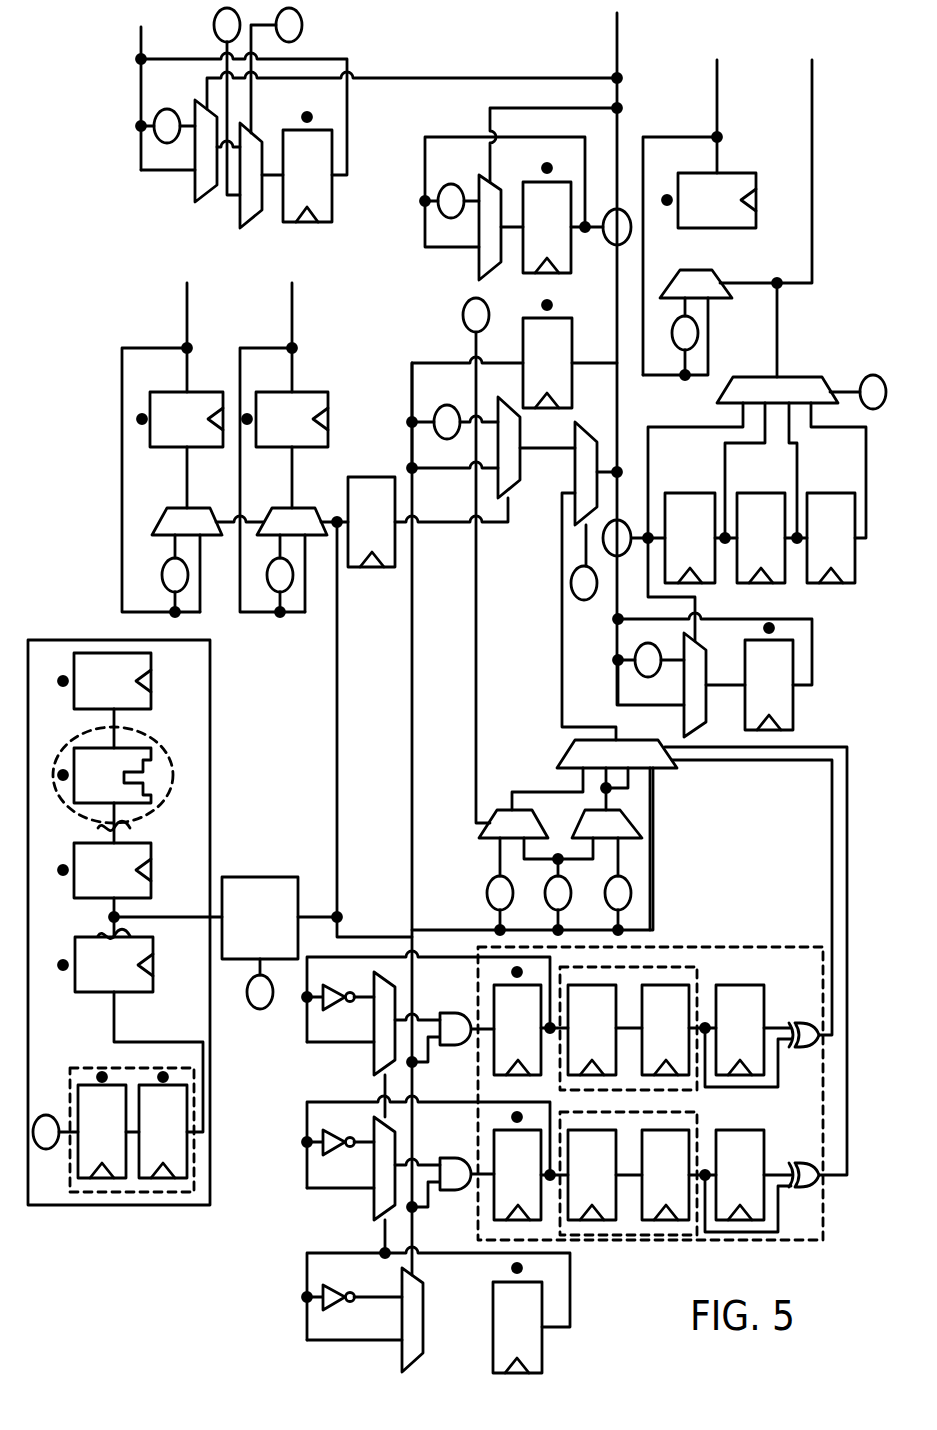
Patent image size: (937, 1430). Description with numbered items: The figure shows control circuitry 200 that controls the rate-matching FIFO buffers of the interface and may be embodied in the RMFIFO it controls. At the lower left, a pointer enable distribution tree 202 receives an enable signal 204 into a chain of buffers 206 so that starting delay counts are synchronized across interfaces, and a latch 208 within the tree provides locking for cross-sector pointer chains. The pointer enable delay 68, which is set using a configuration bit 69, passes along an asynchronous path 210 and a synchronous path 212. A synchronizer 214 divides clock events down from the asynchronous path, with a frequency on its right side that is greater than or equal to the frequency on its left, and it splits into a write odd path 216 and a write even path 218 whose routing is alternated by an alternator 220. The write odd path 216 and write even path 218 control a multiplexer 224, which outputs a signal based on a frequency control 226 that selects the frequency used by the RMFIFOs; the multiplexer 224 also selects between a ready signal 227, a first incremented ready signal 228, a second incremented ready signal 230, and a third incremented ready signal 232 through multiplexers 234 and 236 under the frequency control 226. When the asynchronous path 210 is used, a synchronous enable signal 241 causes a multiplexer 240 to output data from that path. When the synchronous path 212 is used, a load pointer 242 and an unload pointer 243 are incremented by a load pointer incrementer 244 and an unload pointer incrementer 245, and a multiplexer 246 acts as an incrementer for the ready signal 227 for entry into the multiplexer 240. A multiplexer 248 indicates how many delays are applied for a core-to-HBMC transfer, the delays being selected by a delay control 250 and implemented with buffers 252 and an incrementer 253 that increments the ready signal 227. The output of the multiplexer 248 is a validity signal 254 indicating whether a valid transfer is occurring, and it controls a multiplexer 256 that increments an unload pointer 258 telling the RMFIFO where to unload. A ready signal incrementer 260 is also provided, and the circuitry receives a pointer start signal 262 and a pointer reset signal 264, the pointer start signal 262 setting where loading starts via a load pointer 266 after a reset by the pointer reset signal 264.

The control circuitry 200 is at (236, 1334).
The pointer enable distribution tree 202 is at (119, 1206).
The enable signal 204 is at (158, 1042).
The buffers 206 is at (114, 652).
The latch 208 is at (130, 748).
The asynchronous path 210 is at (373, 935).
The synchronous path 212 is at (340, 730).
The synchronizer 214 is at (724, 1240).
The write odd path 216 is at (850, 875).
The write even path 218 is at (830, 905).
The alternator 220 is at (566, 1343).
The multiplexer 224 is at (563, 752).
The frequency control 226 is at (464, 303).
The ready signal 227 is at (620, 52).
The first incremented ready signal 228 is at (630, 882).
The second incremented ready signal 230 is at (547, 886).
The third incremented ready signal 232 is at (491, 904).
The multiplexer 234 is at (497, 812).
The multiplexer 236 is at (634, 827).
The multiplexer 240 is at (589, 426).
The synchronous enable signal 241 is at (594, 599).
The load pointer 242 is at (186, 319).
The unload pointer 243 is at (291, 319).
The load pointer incrementer 244 is at (201, 445).
The unload pointer incrementer 245 is at (362, 455).
The multiplexer 246 is at (521, 463).
The multiplexer 248 is at (795, 375).
The delay control 250 is at (874, 374).
The buffers 252 is at (832, 583).
The incrementer 253 is at (811, 722).
The validity signal 254 is at (813, 137).
The multiplexer 256 is at (720, 267).
The unload pointer 258 is at (719, 104).
The ready signal incrementer 260 is at (468, 122).
The pointer start signal 262 is at (214, 21).
The pointer reset signal 264 is at (303, 20).
The load pointer 266 is at (140, 47).
The pointer enable delay 68 is at (262, 877).
The configuration bit 69 is at (271, 1011).